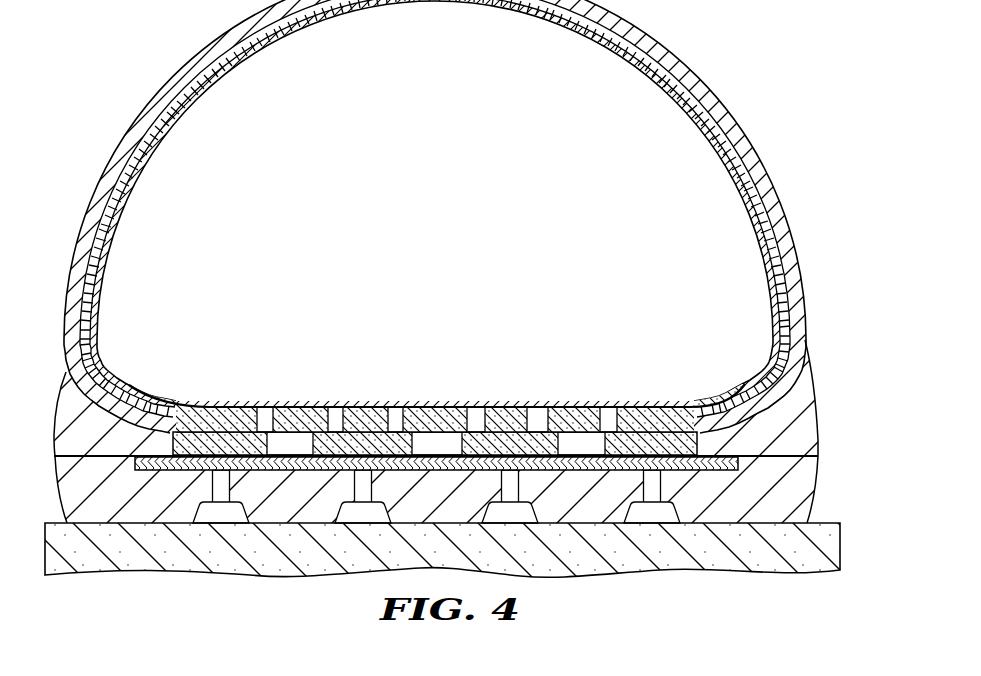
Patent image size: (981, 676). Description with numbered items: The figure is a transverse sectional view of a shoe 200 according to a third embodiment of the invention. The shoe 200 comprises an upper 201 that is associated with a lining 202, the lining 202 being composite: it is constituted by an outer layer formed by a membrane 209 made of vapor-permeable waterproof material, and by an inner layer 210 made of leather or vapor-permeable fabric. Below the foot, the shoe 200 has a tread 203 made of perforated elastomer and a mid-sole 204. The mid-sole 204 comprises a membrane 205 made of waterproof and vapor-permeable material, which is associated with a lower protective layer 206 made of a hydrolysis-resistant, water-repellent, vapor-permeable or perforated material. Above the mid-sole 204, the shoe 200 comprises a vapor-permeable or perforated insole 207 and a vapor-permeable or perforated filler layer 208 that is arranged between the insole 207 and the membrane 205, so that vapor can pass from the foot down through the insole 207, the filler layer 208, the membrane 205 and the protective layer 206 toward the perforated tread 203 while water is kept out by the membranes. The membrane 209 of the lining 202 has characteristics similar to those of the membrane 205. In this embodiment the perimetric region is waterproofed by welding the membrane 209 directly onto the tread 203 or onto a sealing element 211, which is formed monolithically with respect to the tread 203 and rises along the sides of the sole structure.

The shoe 200 is at (699, 81).
The upper 201 is at (181, 80).
The lining 202 is at (214, 85).
The tread 203 is at (733, 511).
The mid-sole 204 is at (183, 475).
The membrane 205 is at (303, 480).
The lower protective layer 206 is at (577, 463).
The insole 207 is at (643, 410).
The filler layer 208 is at (505, 437).
The membrane 209 is at (127, 163).
The inner layer 210 is at (100, 300).
The sealing element 211 is at (800, 415).